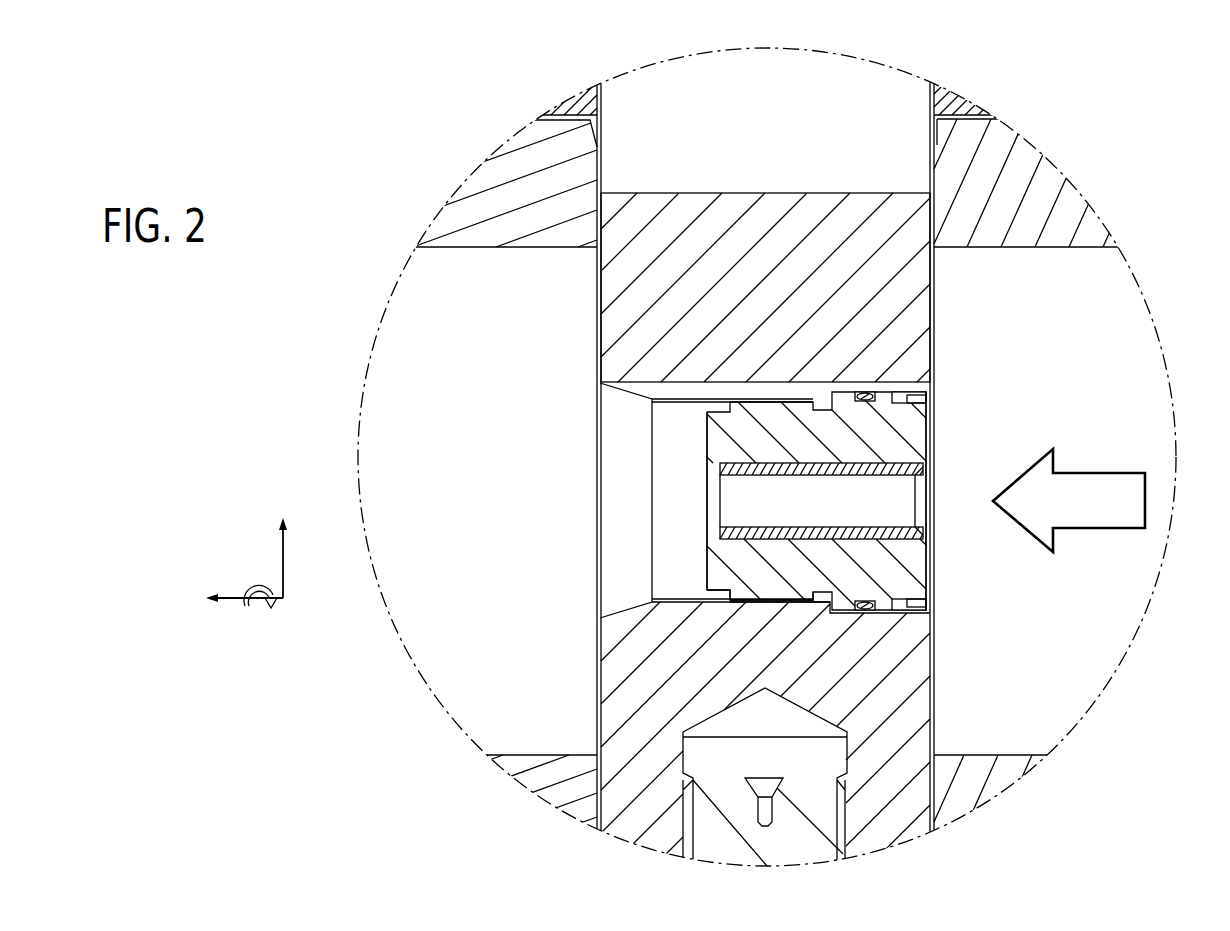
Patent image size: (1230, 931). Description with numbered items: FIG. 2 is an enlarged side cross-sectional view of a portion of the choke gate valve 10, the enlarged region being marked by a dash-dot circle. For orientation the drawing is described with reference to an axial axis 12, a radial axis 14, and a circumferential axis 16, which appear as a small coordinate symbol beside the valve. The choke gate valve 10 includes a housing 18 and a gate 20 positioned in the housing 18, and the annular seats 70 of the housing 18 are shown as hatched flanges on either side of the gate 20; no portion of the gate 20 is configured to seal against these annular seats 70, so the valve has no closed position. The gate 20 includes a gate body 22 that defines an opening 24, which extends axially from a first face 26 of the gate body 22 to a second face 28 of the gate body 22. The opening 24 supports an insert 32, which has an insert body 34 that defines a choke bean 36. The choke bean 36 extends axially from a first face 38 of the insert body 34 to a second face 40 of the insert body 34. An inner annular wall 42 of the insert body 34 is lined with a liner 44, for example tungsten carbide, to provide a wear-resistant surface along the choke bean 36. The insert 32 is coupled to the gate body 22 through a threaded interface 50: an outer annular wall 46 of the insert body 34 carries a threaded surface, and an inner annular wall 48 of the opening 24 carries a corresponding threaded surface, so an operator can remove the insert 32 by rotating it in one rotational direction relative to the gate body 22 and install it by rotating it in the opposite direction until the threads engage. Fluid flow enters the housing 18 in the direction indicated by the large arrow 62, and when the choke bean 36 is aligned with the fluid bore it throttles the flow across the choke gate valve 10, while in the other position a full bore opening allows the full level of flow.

The choke gate valve 10 is at (769, 461).
The axial axis 12 is at (233, 600).
The radial axis 14 is at (285, 567).
The circumferential axis 16 is at (267, 588).
The housing 18 is at (955, 96).
The gate 20 is at (641, 60).
The gate body 22 is at (715, 208).
The opening 24 is at (676, 400).
The first face 26 is at (932, 228).
The second face 28 is at (597, 222).
The insert 32 is at (855, 494).
The insert body 34 is at (760, 411).
The choke bean 36 is at (887, 507).
The first face 38 is at (934, 437).
The second face 40 is at (706, 443).
The inner annular wall 42 is at (822, 462).
The liner 44 is at (818, 530).
The outer annular wall 46 is at (772, 598).
The inner annular wall 48 is at (775, 603).
The threaded interface 50 is at (732, 612).
The arrow 62 is at (1100, 473).
The annular seats 70 is at (427, 233).